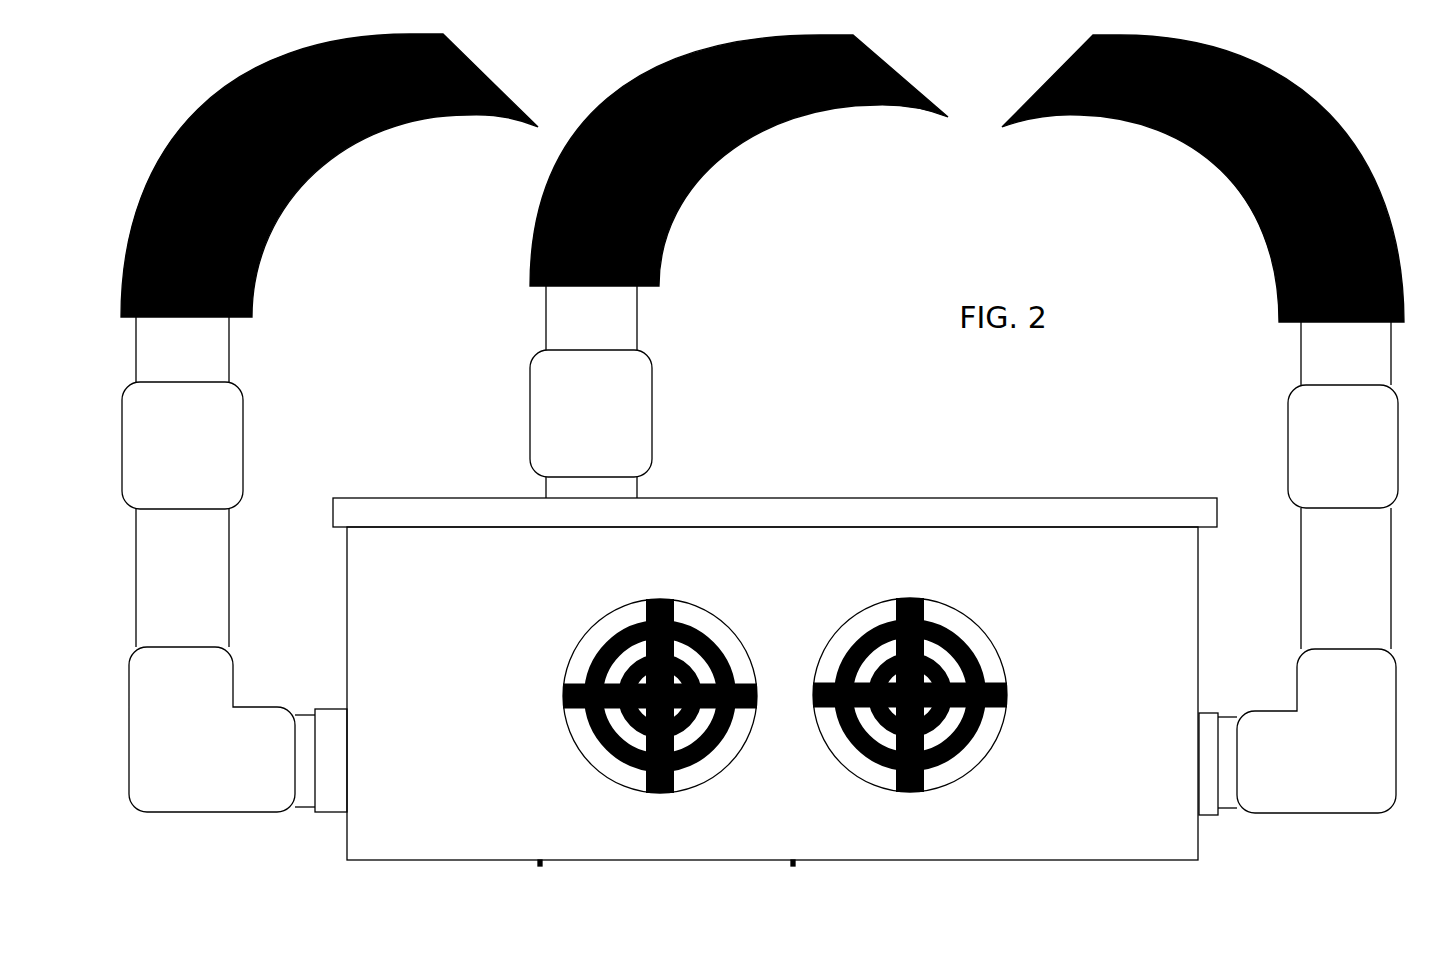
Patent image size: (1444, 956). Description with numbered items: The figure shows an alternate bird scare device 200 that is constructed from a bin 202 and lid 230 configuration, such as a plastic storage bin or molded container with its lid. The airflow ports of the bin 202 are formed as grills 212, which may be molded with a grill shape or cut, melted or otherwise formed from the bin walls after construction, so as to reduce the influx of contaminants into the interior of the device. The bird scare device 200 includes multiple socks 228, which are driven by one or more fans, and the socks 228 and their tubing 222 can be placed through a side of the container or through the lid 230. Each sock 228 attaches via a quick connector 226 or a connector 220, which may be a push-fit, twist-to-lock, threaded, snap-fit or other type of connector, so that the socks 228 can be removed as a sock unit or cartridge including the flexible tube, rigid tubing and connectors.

The bird scare device 200 is at (948, 252).
The bin 202 is at (772, 696).
The grill 212 is at (658, 792).
The connector 220 is at (762, 731).
The pipe 222 is at (763, 467).
The quick connector 226 is at (243, 450).
The sock 228 is at (267, 236).
The lid 230 is at (903, 513).